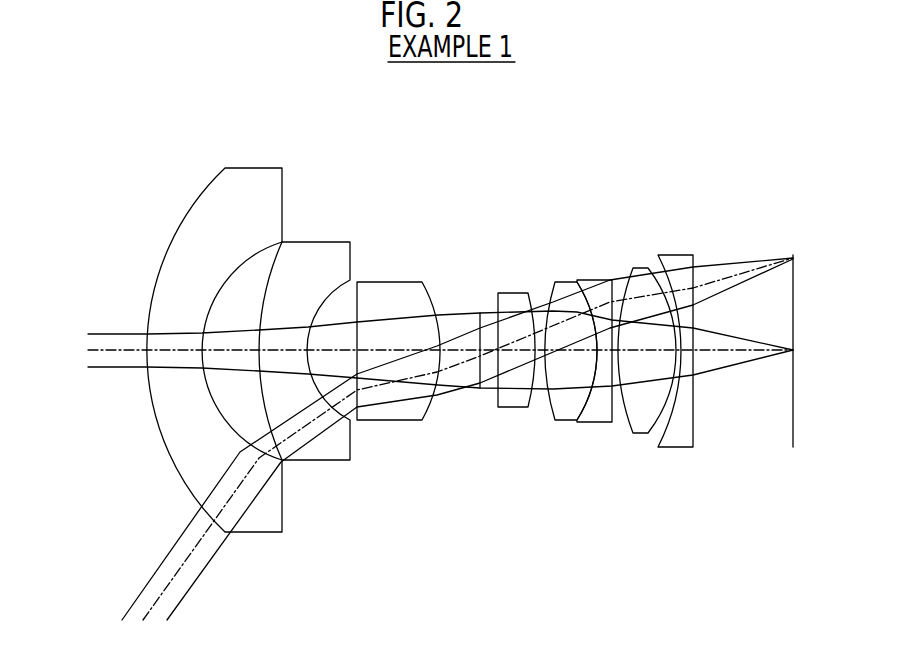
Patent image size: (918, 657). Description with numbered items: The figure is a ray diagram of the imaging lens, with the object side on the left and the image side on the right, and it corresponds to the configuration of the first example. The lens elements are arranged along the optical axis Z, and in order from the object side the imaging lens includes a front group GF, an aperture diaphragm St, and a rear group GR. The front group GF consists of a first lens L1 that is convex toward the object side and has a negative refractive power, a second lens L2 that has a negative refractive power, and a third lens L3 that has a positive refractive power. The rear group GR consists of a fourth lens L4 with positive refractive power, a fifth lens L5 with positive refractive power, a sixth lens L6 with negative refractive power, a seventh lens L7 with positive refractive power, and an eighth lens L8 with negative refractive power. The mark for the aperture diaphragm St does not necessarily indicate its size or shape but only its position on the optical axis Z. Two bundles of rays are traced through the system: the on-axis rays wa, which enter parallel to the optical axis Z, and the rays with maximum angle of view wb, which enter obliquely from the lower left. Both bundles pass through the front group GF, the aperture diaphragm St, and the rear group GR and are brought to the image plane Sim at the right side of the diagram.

The optical axis Z is at (107, 349).
The on-axis rays wa is at (90, 317).
The rays with maximum angle of view wb is at (183, 621).
The front group GF is at (408, 98).
The rear group GR is at (733, 98).
The first lens L1 is at (253, 168).
The second lens L2 is at (321, 248).
The third lens L3 is at (393, 287).
The fourth lens L4 is at (510, 298).
The fifth lens L5 is at (568, 280).
The sixth lens L6 is at (595, 283).
The seventh lens L7 is at (640, 268).
The eighth lens L8 is at (678, 267).
The aperture diaphragm St is at (476, 389).
The image plane Sim is at (793, 446).